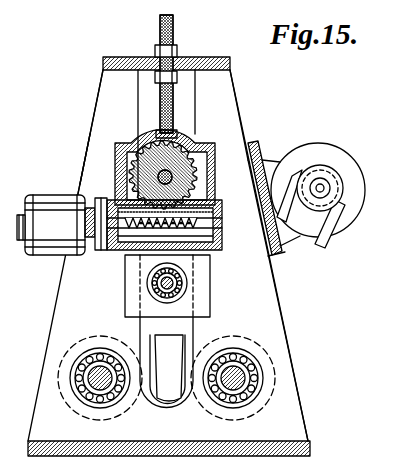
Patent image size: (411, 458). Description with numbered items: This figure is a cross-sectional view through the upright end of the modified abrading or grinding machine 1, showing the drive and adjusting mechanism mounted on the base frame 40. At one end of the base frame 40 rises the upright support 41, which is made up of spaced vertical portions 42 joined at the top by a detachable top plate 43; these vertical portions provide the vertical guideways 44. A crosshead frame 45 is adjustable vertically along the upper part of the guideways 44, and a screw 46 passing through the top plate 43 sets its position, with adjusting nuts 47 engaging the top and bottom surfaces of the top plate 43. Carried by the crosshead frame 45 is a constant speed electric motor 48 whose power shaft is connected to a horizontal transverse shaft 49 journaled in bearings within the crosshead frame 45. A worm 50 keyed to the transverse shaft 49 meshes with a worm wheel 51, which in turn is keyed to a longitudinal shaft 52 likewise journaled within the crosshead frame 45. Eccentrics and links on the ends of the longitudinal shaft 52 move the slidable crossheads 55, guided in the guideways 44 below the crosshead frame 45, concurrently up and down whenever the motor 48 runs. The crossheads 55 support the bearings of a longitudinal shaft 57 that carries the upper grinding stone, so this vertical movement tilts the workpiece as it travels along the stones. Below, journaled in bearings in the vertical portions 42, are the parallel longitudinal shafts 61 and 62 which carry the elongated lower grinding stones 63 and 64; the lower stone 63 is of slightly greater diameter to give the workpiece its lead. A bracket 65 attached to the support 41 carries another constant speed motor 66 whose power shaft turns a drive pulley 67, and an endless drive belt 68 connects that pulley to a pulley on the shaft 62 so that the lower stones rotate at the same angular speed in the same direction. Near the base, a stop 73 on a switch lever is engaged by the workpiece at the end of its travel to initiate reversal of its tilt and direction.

The abrading or grinding machine 1 is at (93, 89).
The base frame 40 is at (310, 447).
The upright support 41 is at (96, 103).
The spaced vertical portions 42 is at (96, 123).
The detachable top plate 43 is at (216, 56).
The vertical guideways 44 is at (197, 337).
The crosshead frame 45 is at (225, 150).
The screw 46 is at (166, 28).
The adjusting nuts 47 is at (178, 54).
The motor 48 is at (44, 194).
The horizontal transverse shaft 49 is at (215, 198).
The worm 50 is at (157, 233).
The worm wheel 51 is at (170, 140).
The longitudinal shaft 52 is at (216, 158).
The slidable crossheads 55 is at (212, 310).
The longitudinal shaft 57 is at (166, 298).
The longitudinal shaft 61 is at (88, 383).
The longitudinal shaft 62 is at (240, 380).
The grinding stone 63 is at (55, 360).
The grinding stone 64 is at (277, 353).
The bracket 65 is at (267, 157).
The motor 66 is at (337, 143).
The drive pulley 67 is at (333, 172).
The endless drive belt 68 is at (330, 248).
The stop 73 is at (157, 353).